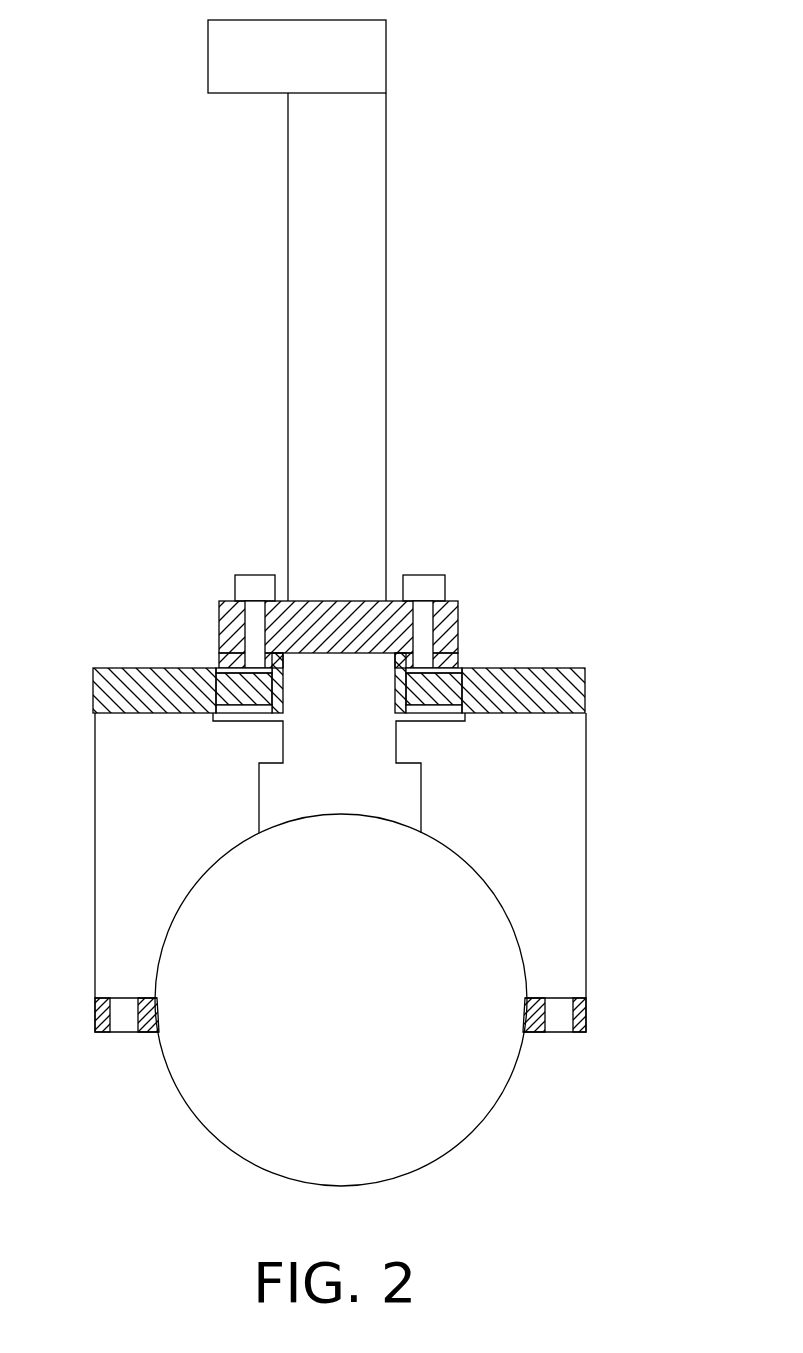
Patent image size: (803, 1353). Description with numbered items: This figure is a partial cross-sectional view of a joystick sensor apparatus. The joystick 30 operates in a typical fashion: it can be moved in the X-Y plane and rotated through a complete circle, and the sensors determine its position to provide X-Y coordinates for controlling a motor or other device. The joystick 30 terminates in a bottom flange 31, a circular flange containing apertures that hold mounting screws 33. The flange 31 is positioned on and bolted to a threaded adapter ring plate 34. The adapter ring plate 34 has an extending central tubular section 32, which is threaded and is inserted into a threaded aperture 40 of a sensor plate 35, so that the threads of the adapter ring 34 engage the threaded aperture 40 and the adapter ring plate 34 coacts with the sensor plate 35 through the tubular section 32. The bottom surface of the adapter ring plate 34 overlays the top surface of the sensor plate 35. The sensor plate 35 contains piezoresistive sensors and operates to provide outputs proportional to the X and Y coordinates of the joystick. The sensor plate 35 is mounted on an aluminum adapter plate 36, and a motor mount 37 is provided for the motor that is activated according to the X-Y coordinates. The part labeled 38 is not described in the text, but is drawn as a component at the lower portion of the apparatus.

The joystick 30 is at (288, 275).
The bottom flange 31 is at (458, 603).
The central tubular section 32 is at (410, 700).
The mounting screws 33 is at (234, 575).
The threaded adapter ring plate 34 is at (217, 662).
The sensor plate 35 is at (92, 688).
The aluminum adapter plate 36 is at (93, 822).
The motor mount 37 is at (193, 1115).
The bottom retaining flange 38 is at (588, 1015).
The threaded aperture 40 is at (392, 675).